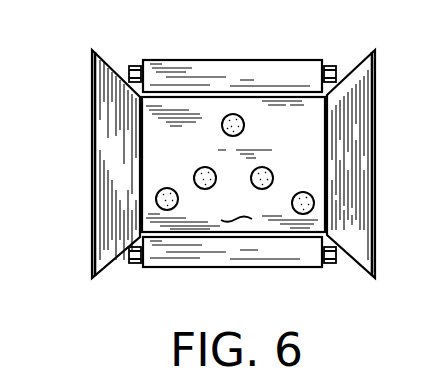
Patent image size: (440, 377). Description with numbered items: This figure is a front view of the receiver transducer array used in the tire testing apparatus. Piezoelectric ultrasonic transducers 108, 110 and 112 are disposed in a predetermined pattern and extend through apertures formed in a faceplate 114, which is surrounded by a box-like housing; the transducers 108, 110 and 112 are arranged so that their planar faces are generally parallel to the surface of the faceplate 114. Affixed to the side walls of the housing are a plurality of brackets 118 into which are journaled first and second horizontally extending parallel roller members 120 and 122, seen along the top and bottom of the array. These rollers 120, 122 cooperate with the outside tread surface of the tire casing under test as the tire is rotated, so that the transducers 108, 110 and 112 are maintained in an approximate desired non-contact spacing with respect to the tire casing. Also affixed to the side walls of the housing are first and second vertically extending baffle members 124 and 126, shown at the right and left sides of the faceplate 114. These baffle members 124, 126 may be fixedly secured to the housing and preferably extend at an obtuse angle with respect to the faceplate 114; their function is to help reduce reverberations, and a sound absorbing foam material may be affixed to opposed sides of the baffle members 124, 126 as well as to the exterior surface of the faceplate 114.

The piezoelectric ultrasonic transducer 108 is at (245, 120).
The piezoelectric ultrasonic transducer 110 is at (195, 172).
The piezoelectric ultrasonic transducer 112 is at (300, 191).
The faceplate 114 is at (236, 208).
The brackets 118 is at (136, 66).
The first roller member 120 is at (222, 60).
The second roller member 122 is at (221, 268).
The first baffle member 124 is at (378, 148).
The second baffle member 126 is at (88, 147).